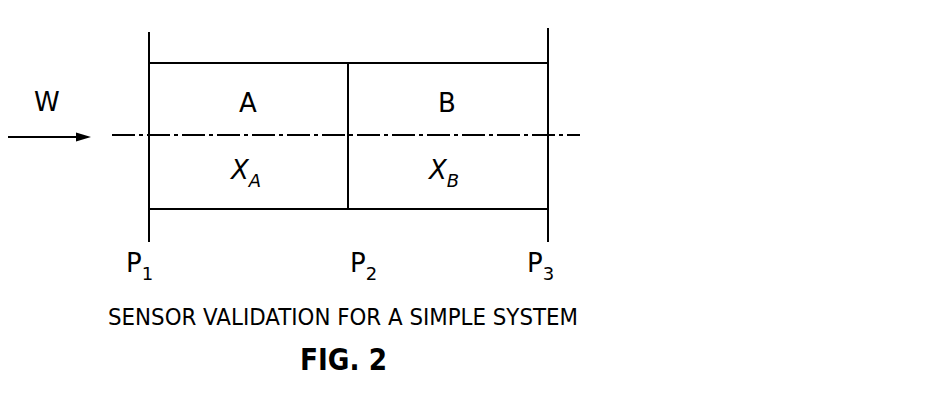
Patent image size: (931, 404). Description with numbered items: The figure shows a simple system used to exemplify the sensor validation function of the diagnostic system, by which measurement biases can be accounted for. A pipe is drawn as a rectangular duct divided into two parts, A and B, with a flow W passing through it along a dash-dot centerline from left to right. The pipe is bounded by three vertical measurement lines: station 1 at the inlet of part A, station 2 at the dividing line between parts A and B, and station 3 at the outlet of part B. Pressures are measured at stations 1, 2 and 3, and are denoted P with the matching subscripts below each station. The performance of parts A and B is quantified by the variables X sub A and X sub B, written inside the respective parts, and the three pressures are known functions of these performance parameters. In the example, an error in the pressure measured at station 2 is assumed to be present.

The station 1 is at (141, 134).
The station 2 is at (357, 116).
The station 3 is at (538, 133).